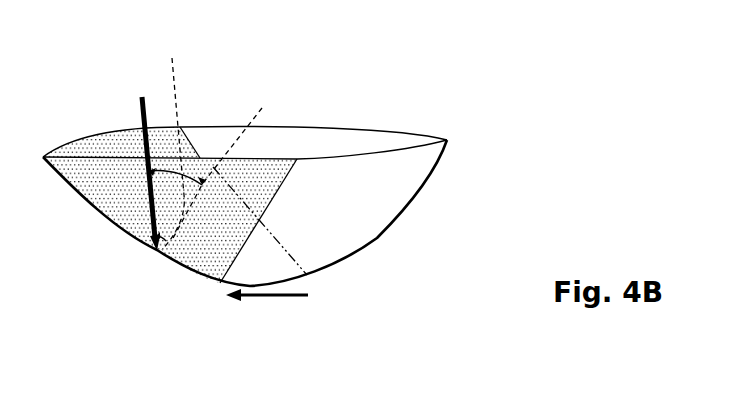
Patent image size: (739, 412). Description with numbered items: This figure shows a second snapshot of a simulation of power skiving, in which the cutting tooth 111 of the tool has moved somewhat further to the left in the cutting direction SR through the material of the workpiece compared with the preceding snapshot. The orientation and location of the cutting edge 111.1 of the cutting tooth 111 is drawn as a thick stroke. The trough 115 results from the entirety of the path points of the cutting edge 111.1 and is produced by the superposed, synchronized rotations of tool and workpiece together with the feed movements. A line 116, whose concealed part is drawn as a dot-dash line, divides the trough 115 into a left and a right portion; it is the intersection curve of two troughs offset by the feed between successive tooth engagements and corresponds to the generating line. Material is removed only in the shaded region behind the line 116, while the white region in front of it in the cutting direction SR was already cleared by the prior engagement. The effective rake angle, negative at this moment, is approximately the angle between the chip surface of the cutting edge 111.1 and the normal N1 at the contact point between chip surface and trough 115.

The cutting tooth 111 is at (181, 228).
The cutting edge 111.1 is at (147, 126).
The trough 115 is at (377, 238).
The line 116 is at (193, 148).
The normal N1 is at (239, 181).
The cutting direction SR is at (251, 298).